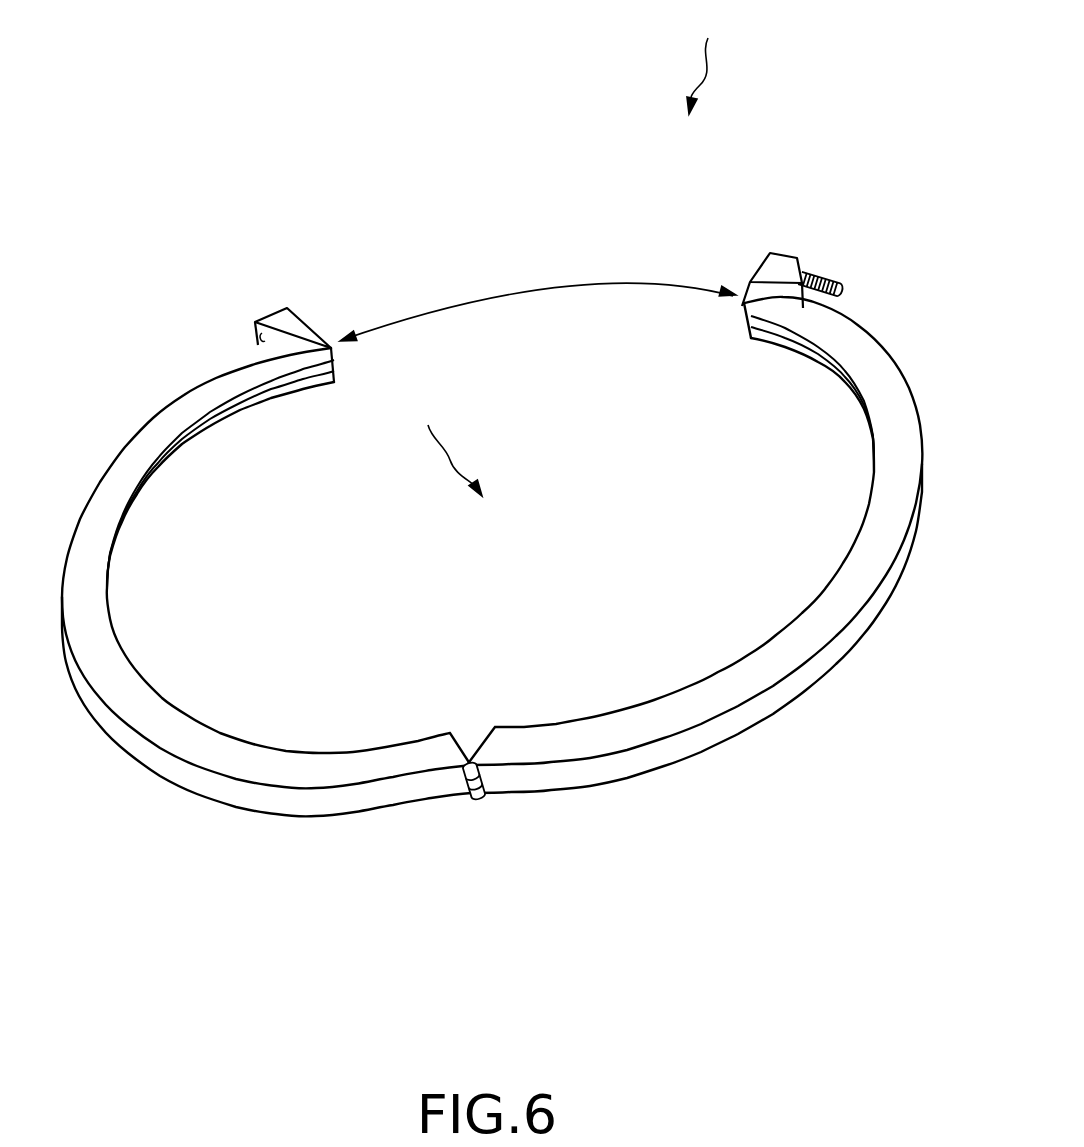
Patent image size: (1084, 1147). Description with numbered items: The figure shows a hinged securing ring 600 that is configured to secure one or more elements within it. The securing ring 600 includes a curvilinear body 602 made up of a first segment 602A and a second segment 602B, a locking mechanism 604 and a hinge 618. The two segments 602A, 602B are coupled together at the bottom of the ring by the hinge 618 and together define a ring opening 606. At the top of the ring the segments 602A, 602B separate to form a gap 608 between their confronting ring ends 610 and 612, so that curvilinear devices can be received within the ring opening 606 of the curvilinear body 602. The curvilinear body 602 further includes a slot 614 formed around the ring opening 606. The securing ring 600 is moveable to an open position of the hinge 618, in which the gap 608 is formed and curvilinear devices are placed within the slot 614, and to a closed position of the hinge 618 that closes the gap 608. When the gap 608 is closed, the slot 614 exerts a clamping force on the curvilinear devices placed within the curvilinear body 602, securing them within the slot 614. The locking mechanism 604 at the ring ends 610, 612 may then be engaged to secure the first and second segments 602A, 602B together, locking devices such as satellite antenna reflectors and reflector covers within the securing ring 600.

The hinged securing ring 600 is at (715, 61).
The curvilinear body 602 is at (576, 834).
The first segment 602A is at (150, 440).
The second segment 602B is at (830, 574).
The locking mechanism 604 is at (272, 312).
The ring opening 606 is at (438, 446).
The gap 608 is at (537, 290).
The confronting ring end 610 is at (330, 318).
The confronting ring end 612 is at (744, 296).
The slot 614 is at (244, 410).
The hinge 618 is at (481, 802).